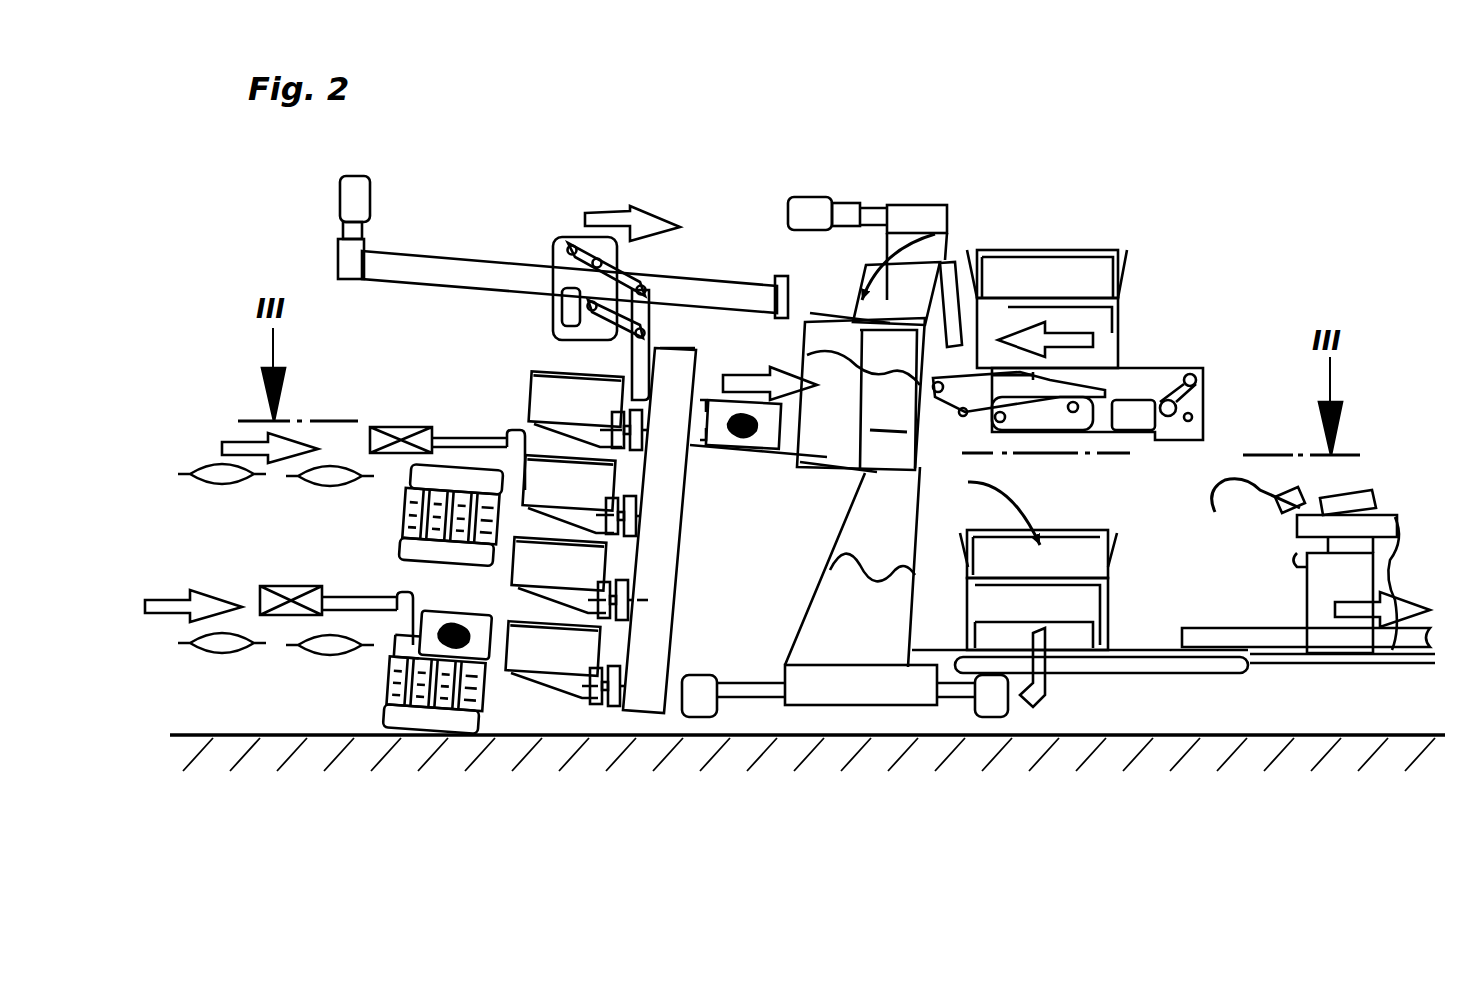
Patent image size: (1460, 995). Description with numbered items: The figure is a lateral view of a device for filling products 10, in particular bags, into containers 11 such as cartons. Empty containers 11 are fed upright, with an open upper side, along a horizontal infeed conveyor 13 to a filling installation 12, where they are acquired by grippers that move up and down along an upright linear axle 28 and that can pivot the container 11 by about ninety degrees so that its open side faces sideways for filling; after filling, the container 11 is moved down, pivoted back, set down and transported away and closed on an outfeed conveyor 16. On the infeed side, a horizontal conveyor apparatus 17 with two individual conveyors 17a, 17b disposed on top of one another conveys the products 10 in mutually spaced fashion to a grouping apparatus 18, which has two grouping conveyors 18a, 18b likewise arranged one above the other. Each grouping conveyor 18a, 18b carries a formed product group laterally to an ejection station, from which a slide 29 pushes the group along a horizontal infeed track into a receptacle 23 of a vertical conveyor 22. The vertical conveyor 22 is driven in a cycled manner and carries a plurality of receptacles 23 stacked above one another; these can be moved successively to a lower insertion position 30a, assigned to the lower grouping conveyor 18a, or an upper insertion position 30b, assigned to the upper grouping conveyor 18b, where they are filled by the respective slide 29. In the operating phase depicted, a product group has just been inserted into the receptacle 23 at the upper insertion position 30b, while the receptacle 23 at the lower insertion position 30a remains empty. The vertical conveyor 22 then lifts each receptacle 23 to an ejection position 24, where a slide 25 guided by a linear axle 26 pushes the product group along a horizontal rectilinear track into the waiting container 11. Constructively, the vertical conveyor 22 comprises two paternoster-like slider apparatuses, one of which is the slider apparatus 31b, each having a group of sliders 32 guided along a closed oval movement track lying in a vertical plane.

The product 10 is at (223, 476).
The container 11 is at (1085, 260).
The filling installation 12 is at (663, 160).
The infeed conveyor 13 is at (1163, 368).
The outfeed conveyor 16 is at (1410, 634).
The horizontal conveyor apparatus 17 is at (211, 693).
The individual conveyor 17a is at (186, 659).
The individual conveyor 17b is at (225, 527).
The grouping apparatus 18 is at (415, 749).
The grouping conveyor 18a is at (487, 723).
The grouping conveyor 18b is at (403, 543).
The vertical conveyor 22 is at (639, 722).
The receptacle 23 is at (568, 683).
The ejection position 24 is at (622, 582).
The slide 25 is at (699, 404).
The linear axle 26 is at (423, 265).
The linear axle 28 is at (917, 213).
The slide 29 is at (500, 444).
The lower insertion position 30a is at (638, 693).
The upper insertion position 30b is at (622, 491).
The slider apparatus 31b is at (678, 347).
The slider 32 is at (640, 600).